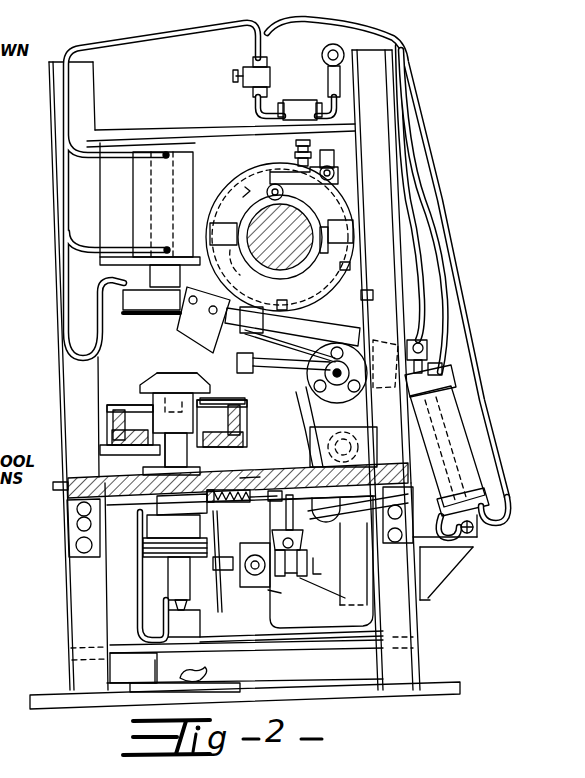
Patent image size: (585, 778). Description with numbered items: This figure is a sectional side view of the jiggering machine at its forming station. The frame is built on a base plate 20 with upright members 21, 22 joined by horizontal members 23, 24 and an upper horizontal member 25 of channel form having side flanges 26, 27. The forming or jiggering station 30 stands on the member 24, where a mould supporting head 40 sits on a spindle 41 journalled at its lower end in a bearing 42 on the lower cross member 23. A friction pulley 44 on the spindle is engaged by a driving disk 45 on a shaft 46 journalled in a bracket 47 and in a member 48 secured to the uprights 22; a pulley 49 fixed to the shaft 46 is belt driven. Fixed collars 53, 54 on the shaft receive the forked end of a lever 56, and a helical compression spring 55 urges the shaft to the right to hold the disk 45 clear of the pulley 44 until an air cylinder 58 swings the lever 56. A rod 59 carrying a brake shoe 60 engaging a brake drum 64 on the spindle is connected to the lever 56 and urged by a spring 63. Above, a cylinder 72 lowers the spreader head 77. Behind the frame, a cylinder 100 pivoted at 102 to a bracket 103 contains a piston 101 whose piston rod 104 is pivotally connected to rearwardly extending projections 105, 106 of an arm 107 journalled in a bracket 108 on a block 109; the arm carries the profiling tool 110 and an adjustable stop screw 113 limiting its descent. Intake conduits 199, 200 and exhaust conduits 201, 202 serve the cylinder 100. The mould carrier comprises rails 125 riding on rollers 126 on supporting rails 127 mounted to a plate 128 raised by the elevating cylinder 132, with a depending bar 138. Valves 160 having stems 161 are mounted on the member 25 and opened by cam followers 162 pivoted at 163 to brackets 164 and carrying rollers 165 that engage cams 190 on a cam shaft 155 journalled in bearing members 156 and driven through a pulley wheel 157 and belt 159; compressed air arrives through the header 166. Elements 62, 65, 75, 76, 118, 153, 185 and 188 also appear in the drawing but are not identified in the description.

The base plate 20 is at (268, 693).
The upright member 21 is at (86, 605).
The upright member 22 is at (410, 607).
The lower cross member 23 is at (323, 642).
The horizontal member 24 is at (238, 472).
The upper horizontal member 25 is at (167, 133).
The side flange 26 is at (90, 95).
The side flange 27 is at (350, 75).
The forming or jiggering station 30 is at (168, 373).
The mould supporting head 40 is at (175, 424).
The spindle 41 is at (147, 527).
The bearing 42 is at (182, 597).
The friction pulley 44 is at (143, 548).
The driving disk 45 is at (219, 612).
The shaft 46 is at (329, 564).
The bracket 47 is at (258, 578).
The member 48 is at (377, 566).
The pulley 49 is at (241, 562).
The fixed collar 53 is at (296, 579).
The fixed collar 54 is at (322, 582).
The helical compression spring 55 is at (284, 593).
The lever 56 is at (293, 545).
The air cylinder 58 is at (326, 510).
The rod 59 is at (286, 515).
The brake shoe 60 is at (242, 510).
The link bar 62 is at (358, 523).
The spring 63 is at (243, 474).
The brake drum 64 is at (182, 504).
The rod end 65 is at (258, 503).
The cylinder 72 is at (133, 190).
The air cylinder 75 is at (133, 172).
The air pipe 76 is at (72, 262).
The spreader head 77 is at (137, 299).
The cylinder 100 is at (458, 462).
The piston 101 is at (472, 470).
The pivotal mounting 102 is at (473, 529).
The bracket 103 is at (470, 551).
The piston rod 104 is at (430, 358).
The rearwardly extending projection 105 is at (367, 318).
The rearwardly extending projection 106 is at (376, 338).
The arm 107 is at (330, 333).
The bracket 108 is at (252, 420).
The block 109 is at (310, 443).
The profiling tool 110 is at (183, 403).
The screw 113 is at (244, 329).
The rod 118 is at (237, 363).
The rail 125 is at (100, 402).
The roller 126 is at (107, 410).
The supporting rail 127 is at (107, 426).
The plate 128 is at (107, 442).
The cylinder 132 is at (162, 668).
The bar 138 is at (68, 478).
The hook 153 is at (215, 668).
The cam shaft 155 is at (296, 256).
The bearing member 156 is at (280, 237).
The pulley wheel 157 is at (344, 268).
The belt 159 is at (290, 346).
The valve 160 is at (299, 108).
The stem 161 is at (295, 152).
The cam follower 162 is at (304, 184).
The pivot 163 is at (334, 174).
The bracket 164 is at (322, 163).
The roller 165 is at (268, 188).
The header 166 is at (323, 50).
The pulley 185 is at (230, 403).
The pulley 188 is at (359, 373).
The cam 190 is at (280, 237).
The conduit 199 is at (511, 505).
The conduit 200 is at (440, 322).
The conduit 201 is at (427, 300).
The conduit 202 is at (482, 423).